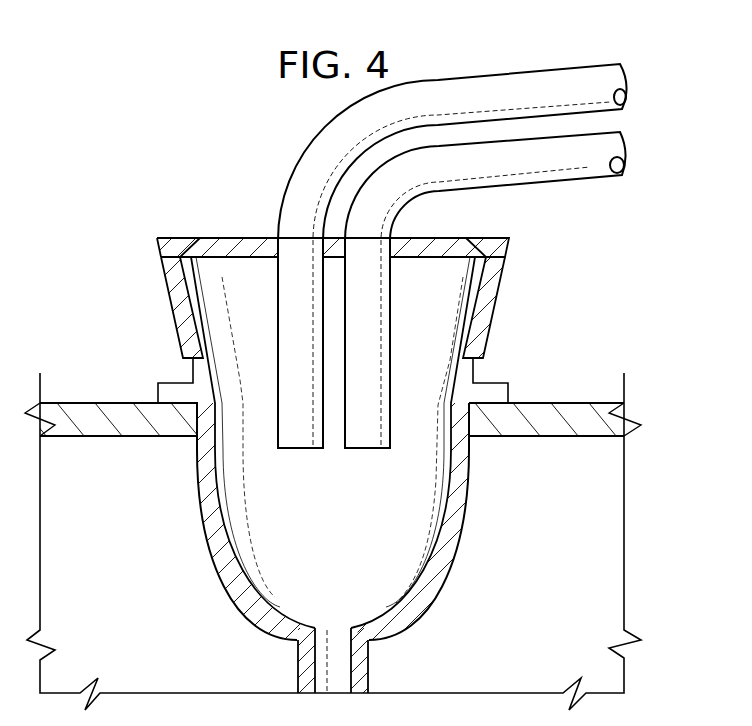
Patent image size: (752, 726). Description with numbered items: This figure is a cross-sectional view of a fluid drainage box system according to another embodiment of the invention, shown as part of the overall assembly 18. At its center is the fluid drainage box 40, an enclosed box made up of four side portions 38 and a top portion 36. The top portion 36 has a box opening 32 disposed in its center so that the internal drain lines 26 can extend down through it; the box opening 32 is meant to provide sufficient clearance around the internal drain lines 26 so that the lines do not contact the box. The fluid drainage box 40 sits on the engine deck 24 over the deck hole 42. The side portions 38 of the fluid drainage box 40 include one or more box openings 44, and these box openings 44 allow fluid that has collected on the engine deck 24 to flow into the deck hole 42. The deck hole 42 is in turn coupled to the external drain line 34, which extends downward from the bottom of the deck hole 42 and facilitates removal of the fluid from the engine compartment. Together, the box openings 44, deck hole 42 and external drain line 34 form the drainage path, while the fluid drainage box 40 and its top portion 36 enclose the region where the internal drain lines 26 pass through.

The fluid delivery assembly 18 is at (158, 9).
The engine deck 24 is at (76, 401).
The internal drain lines 26 is at (573, 77).
The box opening 32 is at (412, 250).
The external drain line 34 is at (306, 656).
The top portion 36 is at (478, 243).
The side portions 38 is at (176, 283).
The fluid drainage box 40 is at (205, 208).
The deck hole 42 is at (428, 518).
The box openings 44 is at (172, 364).